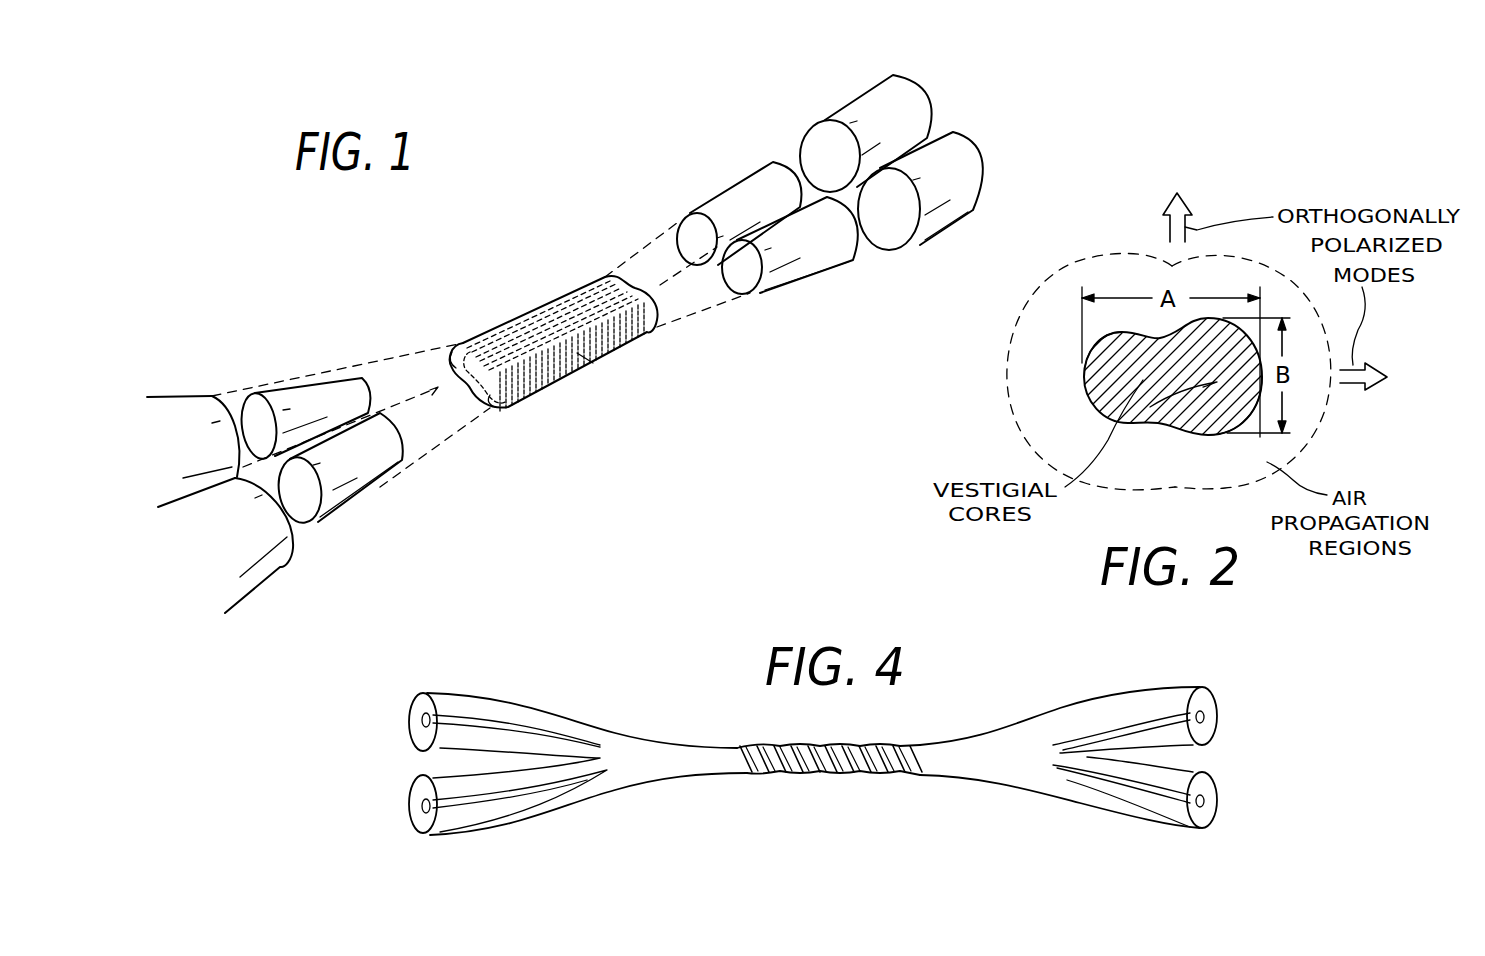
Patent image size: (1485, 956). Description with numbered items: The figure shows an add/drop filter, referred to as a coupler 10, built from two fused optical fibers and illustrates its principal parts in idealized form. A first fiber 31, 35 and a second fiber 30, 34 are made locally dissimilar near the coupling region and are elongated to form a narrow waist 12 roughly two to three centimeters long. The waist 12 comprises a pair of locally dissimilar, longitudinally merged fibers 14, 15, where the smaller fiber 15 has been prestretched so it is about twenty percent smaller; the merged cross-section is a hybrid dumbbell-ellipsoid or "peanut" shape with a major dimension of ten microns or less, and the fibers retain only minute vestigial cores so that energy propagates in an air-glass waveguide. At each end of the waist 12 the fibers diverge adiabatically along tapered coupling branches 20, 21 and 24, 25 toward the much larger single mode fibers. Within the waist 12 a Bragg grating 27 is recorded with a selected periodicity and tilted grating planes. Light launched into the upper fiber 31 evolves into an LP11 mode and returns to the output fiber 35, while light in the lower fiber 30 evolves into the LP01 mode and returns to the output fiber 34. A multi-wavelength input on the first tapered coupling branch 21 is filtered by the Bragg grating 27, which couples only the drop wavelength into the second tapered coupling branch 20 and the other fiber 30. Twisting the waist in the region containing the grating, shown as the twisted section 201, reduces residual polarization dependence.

In FIG. 1, the coupler 10 is at (588, 232).
In FIG. 1, the waist region 12 is at (543, 300).
In FIG. 2, the waist region 12 is at (1142, 452).
In FIG. 1, the merged fiber 14 is at (505, 407).
In FIG. 2, the merged fiber 14 is at (1222, 403).
In FIG. 1, the smaller fiber 15 is at (452, 358).
In FIG. 2, the smaller fiber 15 is at (1093, 373).
In FIG. 1, the second tapered coupling branch 20 is at (357, 477).
In FIG. 1, the first tapered coupling branch 21 is at (302, 390).
In FIG. 1, the tapered coupling branch 24 is at (808, 260).
In FIG. 1, the tapered coupling branch 25 is at (730, 197).
In FIG. 1, the Bragg grating 27 is at (593, 363).
In FIG. 1, the second fiber 30 is at (262, 568).
In FIG. 1, the first fiber 31 is at (173, 403).
In FIG. 1, the output fiber 34 is at (943, 213).
In FIG. 1, the output fiber 35 is at (840, 110).
In FIG. 4, the twisted coupling region 201 is at (853, 780).